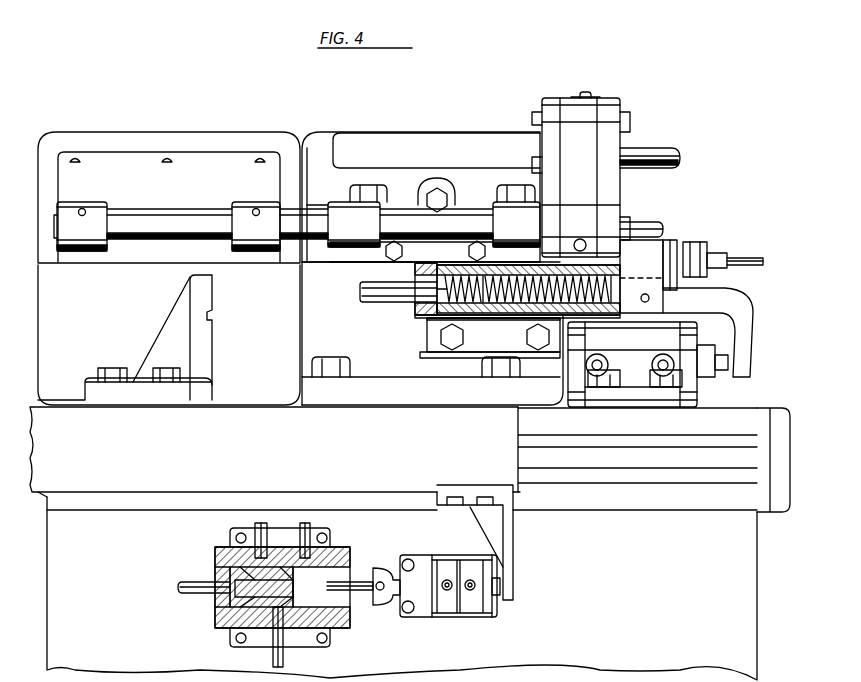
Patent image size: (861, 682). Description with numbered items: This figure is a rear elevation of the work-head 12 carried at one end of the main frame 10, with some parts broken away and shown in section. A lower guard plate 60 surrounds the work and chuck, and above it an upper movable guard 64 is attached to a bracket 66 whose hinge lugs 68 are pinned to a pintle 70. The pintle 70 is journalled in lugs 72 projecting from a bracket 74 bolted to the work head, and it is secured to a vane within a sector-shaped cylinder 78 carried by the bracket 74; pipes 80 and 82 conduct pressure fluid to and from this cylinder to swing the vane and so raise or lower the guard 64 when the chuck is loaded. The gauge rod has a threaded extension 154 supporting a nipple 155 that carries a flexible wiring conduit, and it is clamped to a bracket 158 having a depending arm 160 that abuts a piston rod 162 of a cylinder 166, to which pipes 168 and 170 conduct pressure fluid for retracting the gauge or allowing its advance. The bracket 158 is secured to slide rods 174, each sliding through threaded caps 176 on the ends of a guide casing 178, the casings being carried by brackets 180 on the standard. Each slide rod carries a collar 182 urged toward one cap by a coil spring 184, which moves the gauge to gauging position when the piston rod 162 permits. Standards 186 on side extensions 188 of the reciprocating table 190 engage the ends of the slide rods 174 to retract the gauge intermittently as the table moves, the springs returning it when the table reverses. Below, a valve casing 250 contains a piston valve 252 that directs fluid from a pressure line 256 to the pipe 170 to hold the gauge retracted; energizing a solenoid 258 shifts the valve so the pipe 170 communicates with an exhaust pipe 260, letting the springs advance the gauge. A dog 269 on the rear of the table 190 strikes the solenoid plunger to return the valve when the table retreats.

The main frame 10 is at (655, 513).
The work-head 12 is at (346, 107).
The lower guard plate 60 is at (169, 335).
The upper movable guard 64 is at (183, 131).
The bracket 66 is at (169, 207).
The hinge lugs 68 is at (103, 202).
The pintle 70 is at (165, 214).
The lugs 72 is at (338, 202).
The bracket 74 is at (435, 251).
The sector-shaped cylinder 78 is at (581, 174).
The pipe 80 is at (655, 150).
The pipe 82 is at (641, 222).
The threaded extension 154 is at (686, 245).
The nipple 155 is at (710, 254).
The bracket 158 is at (641, 276).
The depending arm 160 is at (737, 320).
The piston rod 162 is at (722, 377).
The cylinder 166 is at (632, 364).
The pipe 168 is at (308, 530).
The pipe 170 is at (640, 390).
The slide rods 174 is at (360, 292).
The threaded caps 176 is at (415, 308).
The guide casing 178 is at (520, 318).
The brackets 180 is at (473, 345).
The collar 182 is at (427, 322).
The coil spring 184 is at (472, 317).
The standards 186 is at (212, 292).
The side extensions 188 is at (617, 459).
The reciprocating table 190 is at (275, 449).
The valve casing 250 is at (340, 628).
The piston valve 252 is at (215, 615).
The pressure line 256 is at (283, 660).
The solenoid 258 is at (460, 617).
The exhaust pipe 260 is at (180, 582).
The dog 269 is at (515, 558).